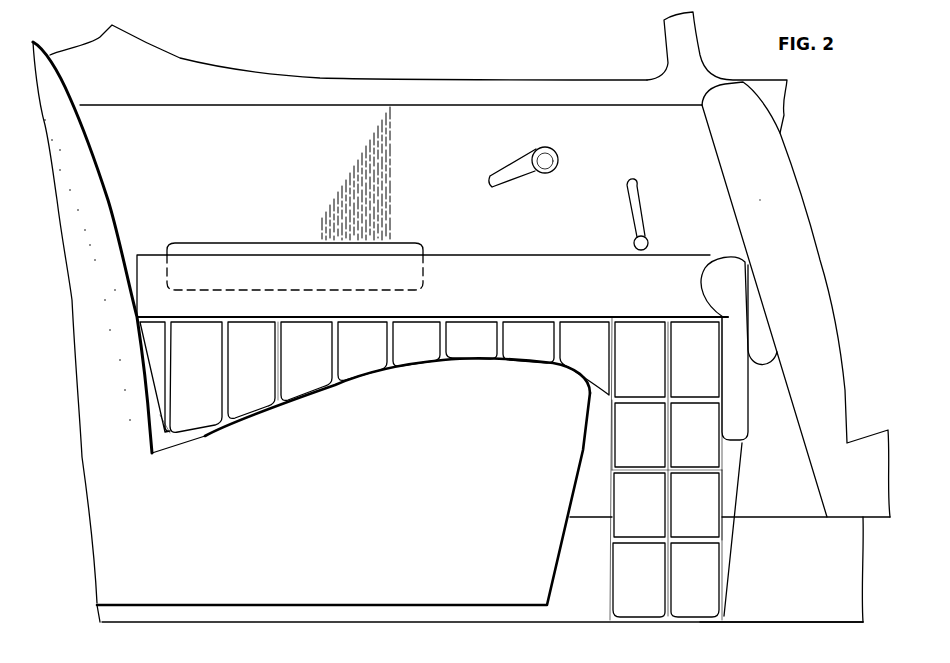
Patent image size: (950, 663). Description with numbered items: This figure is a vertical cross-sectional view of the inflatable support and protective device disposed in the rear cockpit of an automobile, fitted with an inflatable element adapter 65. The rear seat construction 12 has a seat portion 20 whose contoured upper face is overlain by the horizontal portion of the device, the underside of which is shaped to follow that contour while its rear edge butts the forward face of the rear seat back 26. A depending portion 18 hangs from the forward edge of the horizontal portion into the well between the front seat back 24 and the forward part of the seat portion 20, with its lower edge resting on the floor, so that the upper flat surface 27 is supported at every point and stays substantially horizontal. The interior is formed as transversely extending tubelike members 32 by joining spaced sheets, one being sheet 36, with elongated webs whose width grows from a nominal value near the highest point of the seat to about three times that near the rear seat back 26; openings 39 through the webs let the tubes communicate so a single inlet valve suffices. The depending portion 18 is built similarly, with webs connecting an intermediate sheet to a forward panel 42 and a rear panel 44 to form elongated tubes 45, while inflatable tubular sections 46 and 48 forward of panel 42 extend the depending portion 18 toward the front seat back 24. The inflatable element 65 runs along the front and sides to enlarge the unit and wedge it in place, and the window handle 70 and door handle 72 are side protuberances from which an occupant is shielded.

The rear seat construction 12 is at (158, 462).
The depending portion 18 is at (675, 468).
The seat portion 20 is at (340, 383).
The front seat back 24 is at (803, 440).
The rear seat back 26 is at (78, 95).
The upper flat surface 27 is at (590, 313).
The tubelike members 32 is at (420, 353).
The sheet of material 36 is at (200, 437).
The openings 39 is at (670, 384).
The forward panel 42 is at (725, 518).
The rear panel 44 is at (610, 447).
The elongated tubes 45 is at (646, 516).
The inflatable tubular section 46 is at (745, 450).
The inflatable tubular section 48 is at (737, 388).
The inflatable element adapter 65 is at (490, 262).
The window handle 70 is at (520, 178).
The door handle 72 is at (625, 232).